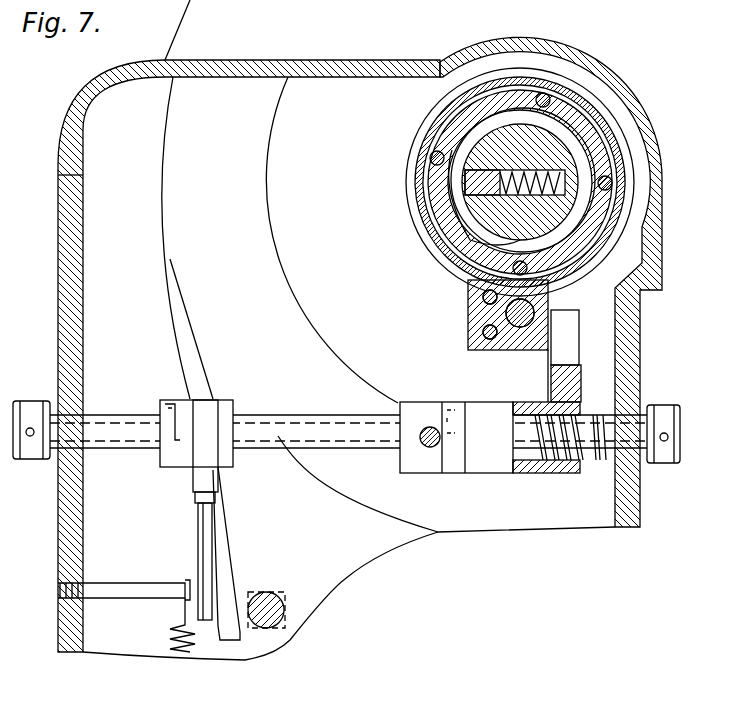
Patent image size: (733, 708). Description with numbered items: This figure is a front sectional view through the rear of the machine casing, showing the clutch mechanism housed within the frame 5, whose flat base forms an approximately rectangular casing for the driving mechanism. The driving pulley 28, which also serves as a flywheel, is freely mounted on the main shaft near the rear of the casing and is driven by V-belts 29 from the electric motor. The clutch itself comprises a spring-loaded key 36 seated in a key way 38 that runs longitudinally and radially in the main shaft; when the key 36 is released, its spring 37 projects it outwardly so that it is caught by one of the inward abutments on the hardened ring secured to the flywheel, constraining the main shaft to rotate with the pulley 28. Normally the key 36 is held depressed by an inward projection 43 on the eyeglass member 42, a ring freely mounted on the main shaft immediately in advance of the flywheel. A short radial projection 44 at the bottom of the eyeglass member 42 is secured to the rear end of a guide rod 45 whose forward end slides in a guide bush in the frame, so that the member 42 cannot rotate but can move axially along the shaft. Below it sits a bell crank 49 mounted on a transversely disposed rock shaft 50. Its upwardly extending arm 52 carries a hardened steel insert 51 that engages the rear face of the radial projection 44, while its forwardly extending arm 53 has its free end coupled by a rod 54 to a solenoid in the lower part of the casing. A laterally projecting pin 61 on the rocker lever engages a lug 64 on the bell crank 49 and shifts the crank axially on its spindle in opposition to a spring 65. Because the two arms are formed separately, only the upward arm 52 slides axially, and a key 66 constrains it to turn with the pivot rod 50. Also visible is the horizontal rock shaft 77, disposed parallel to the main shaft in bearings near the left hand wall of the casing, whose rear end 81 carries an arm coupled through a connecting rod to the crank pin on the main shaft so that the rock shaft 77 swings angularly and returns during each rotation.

The frame 5 is at (628, 508).
The driving pulley 28 is at (187, 197).
The V-belts 29 is at (180, 321).
The spring-loaded key 36 is at (462, 184).
The spring 37 is at (563, 165).
The key way 38 is at (462, 150).
The eyeglass member 42 is at (437, 198).
The inward projection 43 is at (462, 230).
The radial projection 44 is at (470, 302).
The guide rod 45 is at (470, 318).
The bell crank 49 is at (583, 370).
The rock shaft 50 is at (279, 440).
The hardened steel insert 51 is at (550, 350).
The upwardly extending arm 52 is at (568, 338).
The forwardly extending arm 53 is at (185, 398).
The rod 54 is at (200, 527).
The laterally projecting pin 61 is at (433, 448).
The lug 64 is at (455, 467).
The spring 65 is at (599, 462).
The key 66 is at (488, 415).
The horizontal rock shaft 77 is at (270, 592).
The rear end 81 is at (292, 592).